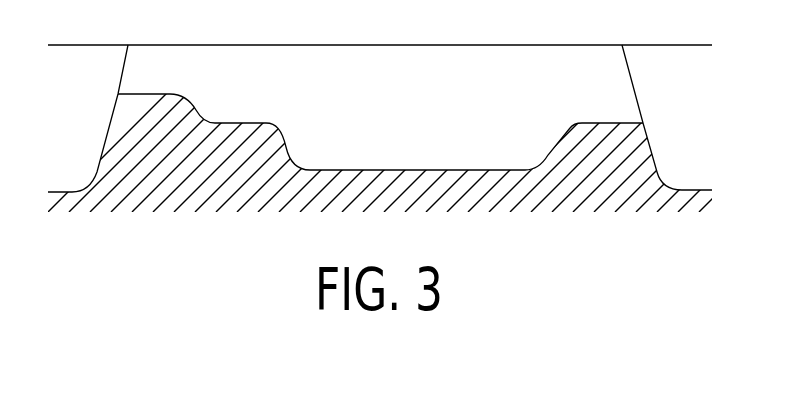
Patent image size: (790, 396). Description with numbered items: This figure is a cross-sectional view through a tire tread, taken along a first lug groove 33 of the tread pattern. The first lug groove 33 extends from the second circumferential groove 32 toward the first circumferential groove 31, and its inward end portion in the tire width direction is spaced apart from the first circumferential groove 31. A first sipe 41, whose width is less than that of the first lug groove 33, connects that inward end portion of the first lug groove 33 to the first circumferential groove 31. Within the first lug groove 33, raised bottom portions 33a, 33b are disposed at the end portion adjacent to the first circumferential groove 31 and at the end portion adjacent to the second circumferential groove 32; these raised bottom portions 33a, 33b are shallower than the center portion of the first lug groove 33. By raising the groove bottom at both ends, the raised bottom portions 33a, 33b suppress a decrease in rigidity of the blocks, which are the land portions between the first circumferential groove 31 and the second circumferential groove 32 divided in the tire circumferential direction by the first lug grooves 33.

The first circumferential groove 31 is at (106, 138).
The second circumferential groove 32 is at (648, 140).
The first lug groove 33 is at (413, 170).
The raised bottom portion 33a is at (235, 123).
The raised bottom portion 33b is at (590, 123).
The first sipe 41 is at (157, 94).